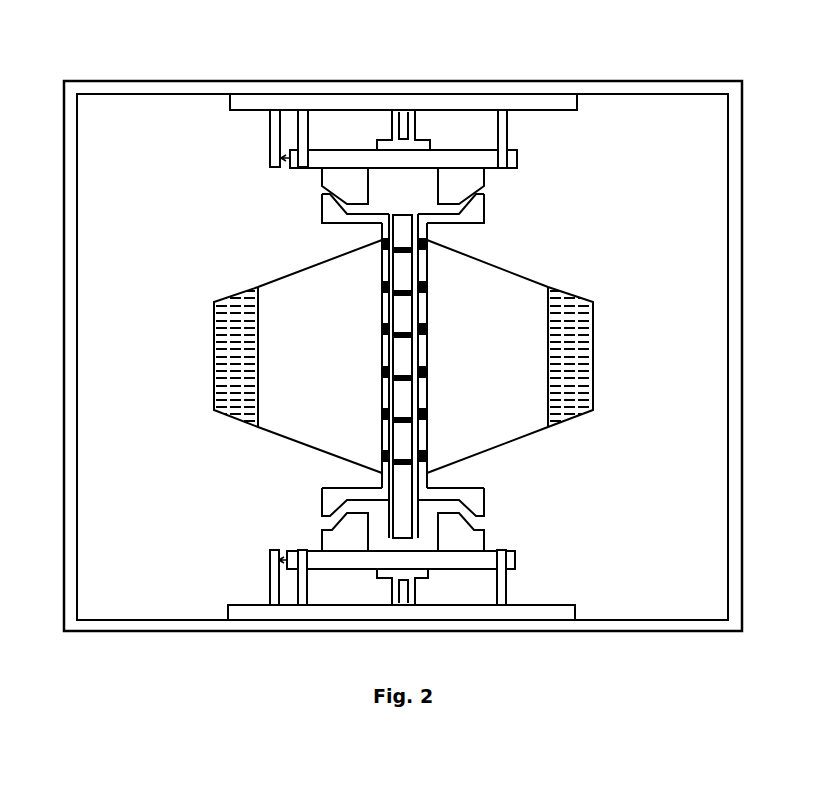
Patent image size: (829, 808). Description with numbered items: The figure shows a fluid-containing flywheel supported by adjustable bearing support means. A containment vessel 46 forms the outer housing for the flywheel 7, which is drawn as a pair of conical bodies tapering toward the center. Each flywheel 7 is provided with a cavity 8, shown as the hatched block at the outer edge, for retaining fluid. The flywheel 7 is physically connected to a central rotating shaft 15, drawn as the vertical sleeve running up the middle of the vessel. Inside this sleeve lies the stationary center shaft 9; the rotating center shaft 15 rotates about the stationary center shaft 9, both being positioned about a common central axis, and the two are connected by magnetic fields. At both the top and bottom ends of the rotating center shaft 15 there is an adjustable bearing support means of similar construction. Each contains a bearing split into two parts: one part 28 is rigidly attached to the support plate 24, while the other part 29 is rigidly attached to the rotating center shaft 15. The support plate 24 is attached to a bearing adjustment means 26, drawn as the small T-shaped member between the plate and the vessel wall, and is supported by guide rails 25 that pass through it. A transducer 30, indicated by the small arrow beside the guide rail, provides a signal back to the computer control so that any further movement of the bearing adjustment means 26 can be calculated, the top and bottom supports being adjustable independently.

The containment vessel 46 is at (660, 81).
The guide rails 25 is at (507, 132).
The transducer 30 is at (270, 147).
The support plate 24 is at (293, 167).
The bearing adjustment means 26 is at (417, 128).
The bearing part 28 is at (485, 178).
The bearing part 29 is at (485, 212).
The flywheel 7 is at (510, 270).
The cavity 8 is at (578, 332).
The stationary center shaft 9 is at (393, 393).
The rotating center shaft 15 is at (427, 482).